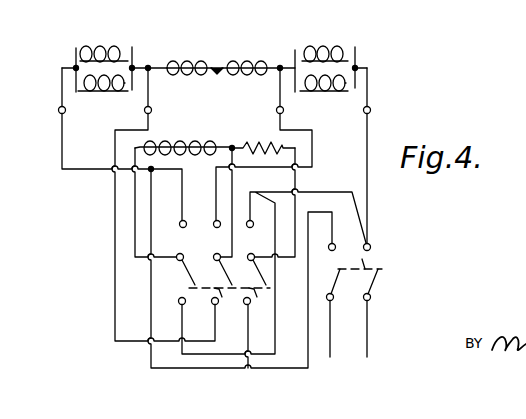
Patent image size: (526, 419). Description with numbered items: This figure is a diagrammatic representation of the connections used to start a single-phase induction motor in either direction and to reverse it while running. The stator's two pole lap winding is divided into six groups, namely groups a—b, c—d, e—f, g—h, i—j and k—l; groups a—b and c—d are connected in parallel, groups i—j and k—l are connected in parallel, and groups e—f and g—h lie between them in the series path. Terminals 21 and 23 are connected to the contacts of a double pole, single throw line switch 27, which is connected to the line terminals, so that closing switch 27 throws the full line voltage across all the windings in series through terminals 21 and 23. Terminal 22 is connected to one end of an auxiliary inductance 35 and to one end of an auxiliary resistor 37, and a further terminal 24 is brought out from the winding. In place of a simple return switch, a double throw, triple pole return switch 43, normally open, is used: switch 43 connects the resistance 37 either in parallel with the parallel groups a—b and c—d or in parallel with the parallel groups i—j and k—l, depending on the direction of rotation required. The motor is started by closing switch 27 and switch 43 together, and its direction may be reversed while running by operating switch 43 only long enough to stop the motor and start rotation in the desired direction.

The terminal 21 is at (371, 110).
The terminal 22 is at (284, 112).
The terminal 23 is at (58, 110).
The terminal 24 is at (152, 110).
The line switch 27 is at (355, 301).
The auxiliary inductance 35 is at (187, 143).
The auxiliary resistor 37 is at (249, 142).
The double throw, triple pole return switch 43 is at (207, 277).
The winding group end a is at (348, 52).
The winding group end b is at (302, 52).
The winding group end c is at (348, 88).
The winding group end d is at (300, 91).
The winding group end e is at (268, 66).
The winding group end f is at (232, 62).
The winding group end g is at (217, 66).
The winding group end h is at (167, 63).
The winding group end i is at (78, 91).
The winding group end j is at (126, 91).
The winding group end k is at (80, 55).
The winding group end l is at (128, 52).